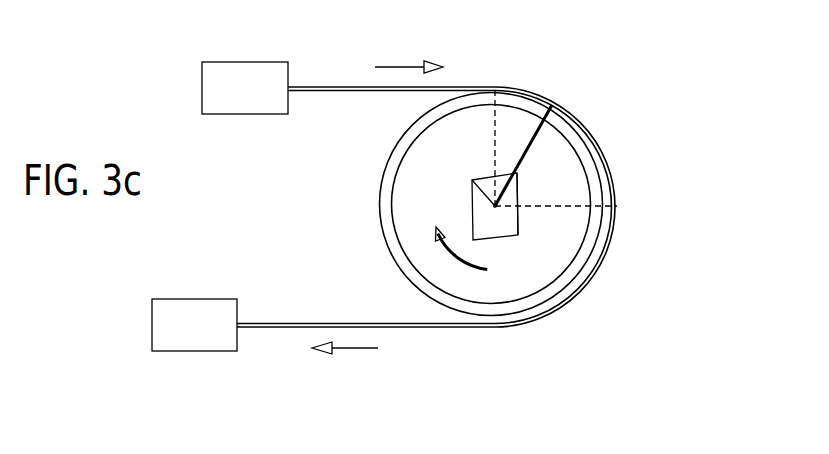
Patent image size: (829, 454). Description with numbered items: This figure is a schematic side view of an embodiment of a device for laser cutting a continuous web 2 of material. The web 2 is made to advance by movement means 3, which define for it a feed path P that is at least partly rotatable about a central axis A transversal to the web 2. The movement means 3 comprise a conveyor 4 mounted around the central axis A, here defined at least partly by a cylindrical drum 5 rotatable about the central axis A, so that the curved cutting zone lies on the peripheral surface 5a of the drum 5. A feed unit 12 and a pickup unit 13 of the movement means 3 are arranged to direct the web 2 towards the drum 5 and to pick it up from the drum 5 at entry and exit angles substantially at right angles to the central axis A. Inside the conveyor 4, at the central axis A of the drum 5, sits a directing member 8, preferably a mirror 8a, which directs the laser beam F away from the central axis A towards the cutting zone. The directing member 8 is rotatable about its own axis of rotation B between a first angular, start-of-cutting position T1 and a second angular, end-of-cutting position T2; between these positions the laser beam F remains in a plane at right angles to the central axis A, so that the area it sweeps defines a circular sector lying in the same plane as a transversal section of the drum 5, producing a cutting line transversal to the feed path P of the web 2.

The web 2 is at (318, 86).
The movement means 3 is at (360, 231).
The conveyor 4 is at (500, 337).
The drum 5 is at (573, 230).
The peripheral surface 5a is at (562, 293).
The directing member 8 is at (577, 275).
The mirror 8a is at (512, 223).
The feed unit 12 is at (253, 97).
The pickup unit 13 is at (201, 332).
The central axis A is at (494, 205).
The axis of rotation B is at (471, 180).
The laser beam F is at (538, 140).
The feed path P is at (377, 207).
The first angular start-of-cutting position T1 is at (497, 128).
The second angular end-of-cutting position T2 is at (583, 206).